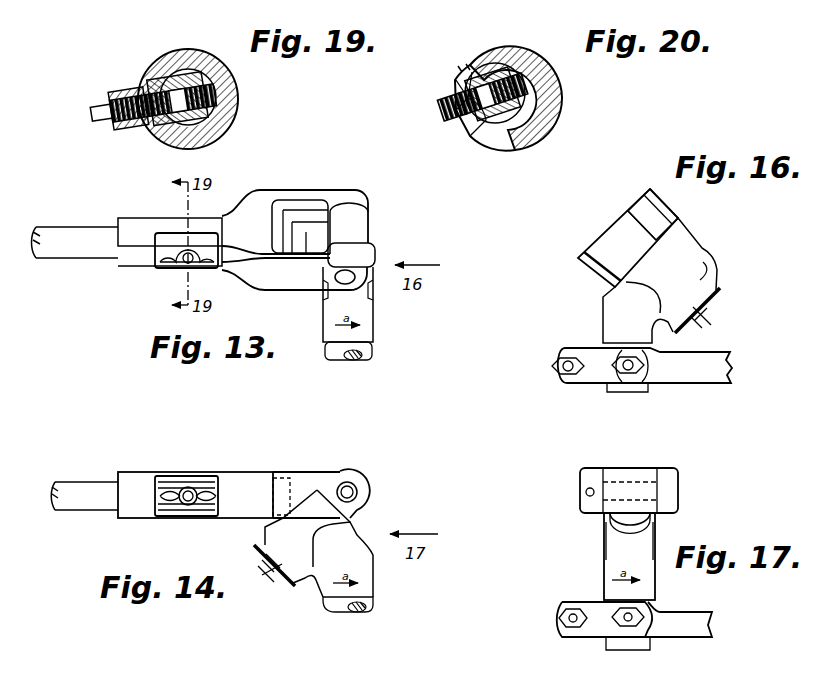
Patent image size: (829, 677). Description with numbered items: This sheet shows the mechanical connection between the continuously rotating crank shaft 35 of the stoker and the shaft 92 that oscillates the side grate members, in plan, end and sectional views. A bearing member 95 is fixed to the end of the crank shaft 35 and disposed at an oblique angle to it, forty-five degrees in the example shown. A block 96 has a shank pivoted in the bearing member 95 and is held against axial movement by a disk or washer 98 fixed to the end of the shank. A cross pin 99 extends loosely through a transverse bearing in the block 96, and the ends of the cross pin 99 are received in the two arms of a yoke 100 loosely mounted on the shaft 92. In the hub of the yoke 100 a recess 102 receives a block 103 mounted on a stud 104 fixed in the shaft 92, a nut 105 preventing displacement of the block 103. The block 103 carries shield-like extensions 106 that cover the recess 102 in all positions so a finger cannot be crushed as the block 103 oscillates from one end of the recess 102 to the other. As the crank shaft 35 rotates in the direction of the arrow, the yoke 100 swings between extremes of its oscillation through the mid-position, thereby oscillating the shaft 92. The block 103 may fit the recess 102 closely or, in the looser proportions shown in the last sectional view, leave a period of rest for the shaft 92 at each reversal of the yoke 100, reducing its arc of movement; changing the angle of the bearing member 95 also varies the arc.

In FIG. 13, the crank shaft 35 is at (345, 362).
In FIG. 16, the crank shaft 35 is at (640, 392).
In FIG. 14, the crank shaft 35 is at (340, 614).
In FIG. 17, the crank shaft 35 is at (635, 648).
In FIG. 19, the shaft 92 is at (188, 84).
In FIG. 20, the shaft 92 is at (518, 52).
In FIG. 13, the shaft 92 is at (60, 262).
In FIG. 14, the shaft 92 is at (93, 480).
In FIG. 16, the bearing member 95 is at (688, 262).
In FIG. 14, the bearing member 95 is at (352, 548).
In FIG. 17, the bearing member 95 is at (620, 548).
In FIG. 13, the block 96 is at (358, 228).
In FIG. 16, the block 96 is at (630, 222).
In FIG. 14, the block 96 is at (352, 527).
In FIG. 17, the block 96 is at (630, 470).
In FIG. 16, the disk or washer 98 is at (722, 292).
In FIG. 14, the disk or washer 98 is at (284, 590).
In FIG. 13, the cross pin 99 is at (335, 280).
In FIG. 14, the cross pin 99 is at (350, 482).
In FIG. 17, the cross pin 99 is at (668, 488).
In FIG. 19, the yoke 100 is at (228, 108).
In FIG. 20, the yoke 100 is at (553, 112).
In FIG. 13, the yoke 100 is at (268, 200).
In FIG. 16, the yoke 100 is at (592, 246).
In FIG. 14, the yoke 100 is at (258, 472).
In FIG. 17, the yoke 100 is at (675, 470).
In FIG. 19, the recess 102 is at (162, 122).
In FIG. 20, the recess 102 is at (528, 120).
In FIG. 13, the recess 102 is at (165, 232).
In FIG. 14, the recess 102 is at (222, 478).
In FIG. 19, the block 103 is at (146, 82).
In FIG. 20, the block 103 is at (474, 125).
In FIG. 13, the block 103 is at (165, 265).
In FIG. 14, the block 103 is at (176, 488).
In FIG. 19, the stud 104 is at (104, 104).
In FIG. 20, the stud 104 is at (432, 110).
In FIG. 14, the stud 104 is at (190, 506).
In FIG. 19, the nut 105 is at (116, 136).
In FIG. 14, the nut 105 is at (162, 510).
In FIG. 20, the shield-like extensions 106 is at (486, 56).